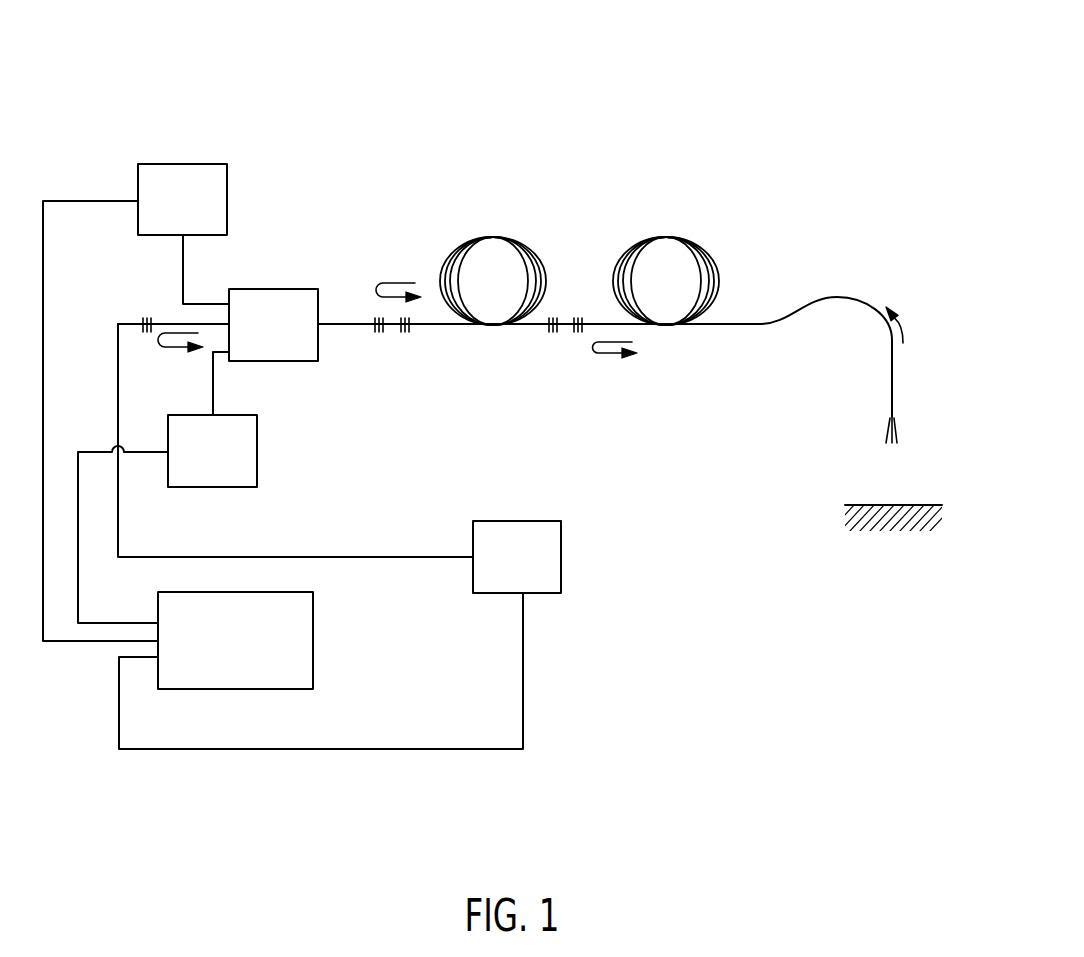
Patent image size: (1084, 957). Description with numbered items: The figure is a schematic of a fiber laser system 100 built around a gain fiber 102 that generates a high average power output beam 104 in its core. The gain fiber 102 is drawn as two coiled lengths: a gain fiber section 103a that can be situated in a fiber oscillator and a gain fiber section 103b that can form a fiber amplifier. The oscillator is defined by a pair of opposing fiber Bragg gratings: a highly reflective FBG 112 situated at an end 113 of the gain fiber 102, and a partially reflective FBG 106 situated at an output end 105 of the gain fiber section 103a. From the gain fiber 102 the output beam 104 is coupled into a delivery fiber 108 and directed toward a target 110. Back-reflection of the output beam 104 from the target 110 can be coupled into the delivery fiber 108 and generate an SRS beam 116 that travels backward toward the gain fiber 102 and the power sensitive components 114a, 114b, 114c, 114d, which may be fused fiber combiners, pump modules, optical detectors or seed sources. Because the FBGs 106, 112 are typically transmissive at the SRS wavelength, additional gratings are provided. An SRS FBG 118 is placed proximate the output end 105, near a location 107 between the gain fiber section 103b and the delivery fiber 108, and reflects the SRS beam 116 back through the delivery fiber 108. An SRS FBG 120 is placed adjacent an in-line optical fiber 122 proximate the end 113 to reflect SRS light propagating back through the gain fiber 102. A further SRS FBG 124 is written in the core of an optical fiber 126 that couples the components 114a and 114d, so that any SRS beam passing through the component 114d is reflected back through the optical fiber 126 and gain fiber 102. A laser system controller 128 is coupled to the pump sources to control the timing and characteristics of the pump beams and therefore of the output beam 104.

The fiber laser system 100 is at (728, 71).
The gain fiber 102 is at (570, 124).
The gain fiber section 103a is at (442, 217).
The gain fiber section 103b is at (607, 214).
The output beam 104 is at (898, 430).
The output end 105 is at (562, 364).
The fiber Bragg grating 106 is at (556, 318).
The location 107 is at (723, 382).
The delivery fiber 108 is at (833, 295).
The target 110 is at (877, 505).
The fiber Bragg grating 112 is at (405, 330).
The end 113 is at (404, 421).
The power sensitive component 114a is at (517, 557).
The power sensitive component 114b is at (182, 199).
The power sensitive component 114c is at (212, 451).
The power sensitive component 114d is at (273, 325).
The SRS beam 116 is at (903, 331).
The SRS FBG 118 is at (578, 318).
The SRS FBG 120 is at (377, 332).
The in-line optical fiber 122 is at (343, 322).
The SRS FBG 124 is at (145, 318).
The optical fiber 126 is at (171, 324).
The laser system controller 128 is at (235, 640).